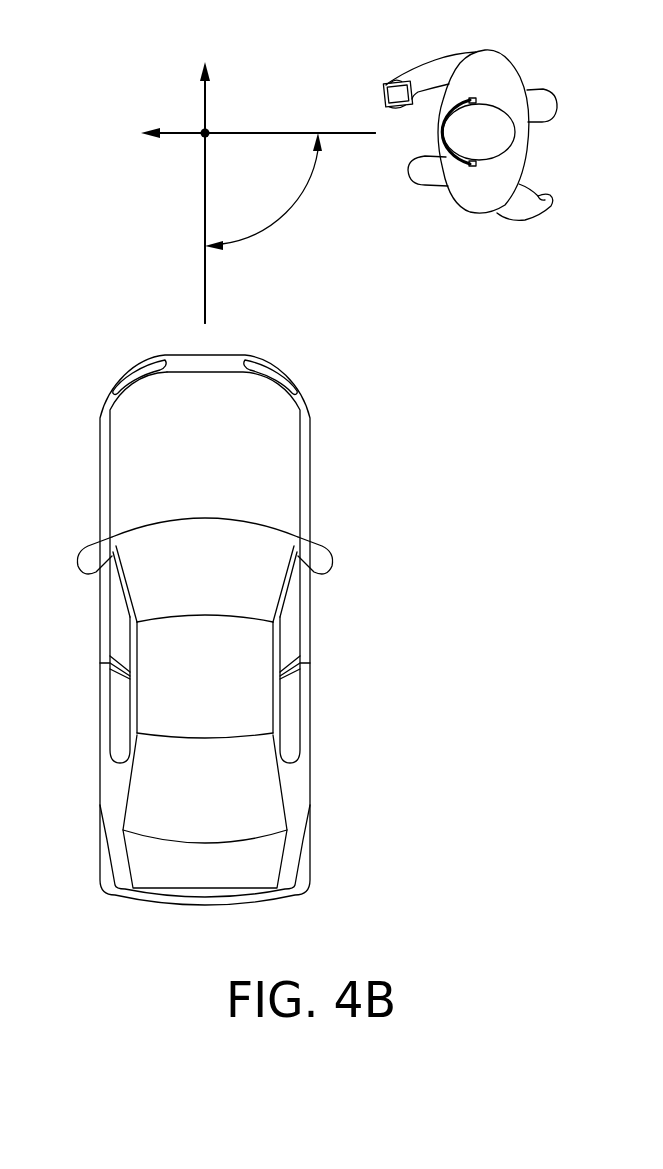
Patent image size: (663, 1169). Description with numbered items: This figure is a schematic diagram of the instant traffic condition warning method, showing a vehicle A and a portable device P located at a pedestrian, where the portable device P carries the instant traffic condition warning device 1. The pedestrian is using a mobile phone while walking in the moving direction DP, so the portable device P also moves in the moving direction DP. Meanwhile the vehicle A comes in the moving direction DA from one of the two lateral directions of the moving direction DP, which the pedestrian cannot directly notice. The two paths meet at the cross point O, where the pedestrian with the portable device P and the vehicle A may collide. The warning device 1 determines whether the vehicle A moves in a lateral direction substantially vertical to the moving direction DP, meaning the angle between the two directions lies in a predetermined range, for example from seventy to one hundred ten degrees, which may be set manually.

The cross point O is at (202, 132).
The moving direction DP is at (286, 131).
The moving direction DA is at (204, 224).
The instant traffic condition warning device 1 is at (466, 100).
The portable device P is at (497, 77).
The vehicle A is at (137, 470).